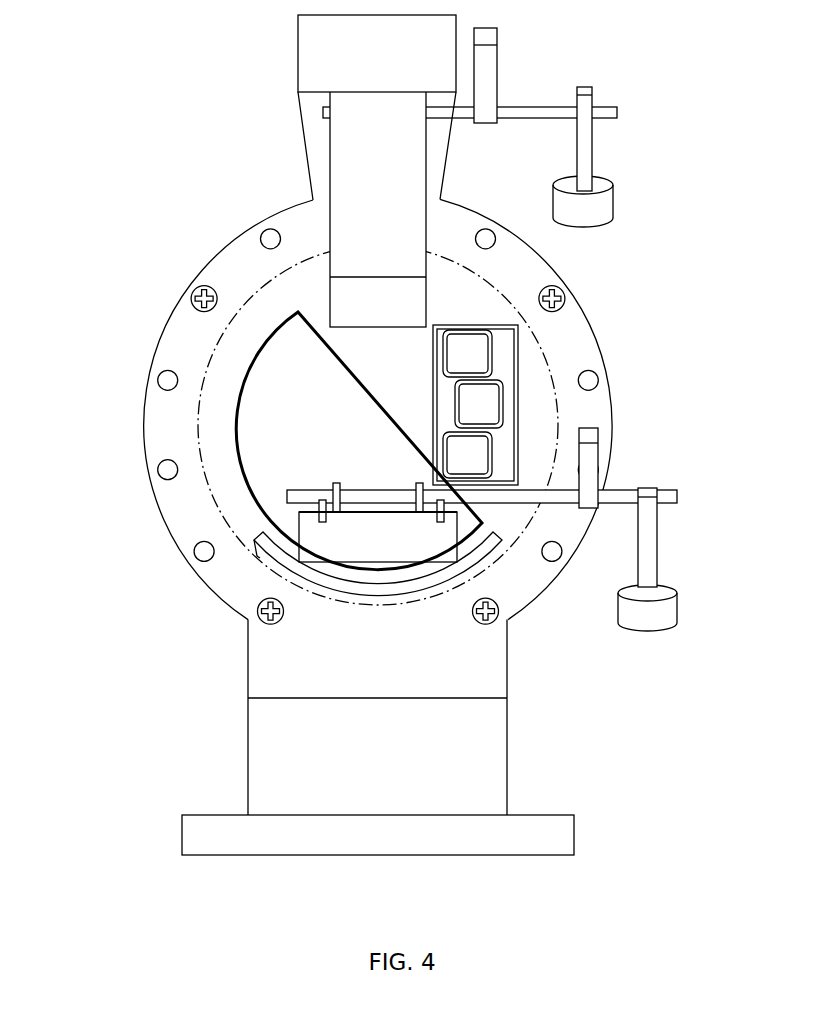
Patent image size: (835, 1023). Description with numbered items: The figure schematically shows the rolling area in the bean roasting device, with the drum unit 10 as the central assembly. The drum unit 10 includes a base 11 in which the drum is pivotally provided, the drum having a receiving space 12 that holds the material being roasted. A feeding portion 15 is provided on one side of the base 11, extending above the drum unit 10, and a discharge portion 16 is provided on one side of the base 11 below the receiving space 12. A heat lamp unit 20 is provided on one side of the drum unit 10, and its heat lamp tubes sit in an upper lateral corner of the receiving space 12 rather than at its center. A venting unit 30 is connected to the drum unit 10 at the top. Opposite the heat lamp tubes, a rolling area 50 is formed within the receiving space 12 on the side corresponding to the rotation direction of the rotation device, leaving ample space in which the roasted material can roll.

The drum unit 10 is at (508, 660).
The base 11 is at (175, 505).
The receiving space 12 is at (532, 330).
The feeding portion 15 is at (343, 177).
The discharge portion 16 is at (333, 538).
The heat lamp unit 20 is at (517, 400).
The venting unit 30 is at (298, 47).
The rolling area 50 is at (233, 402).